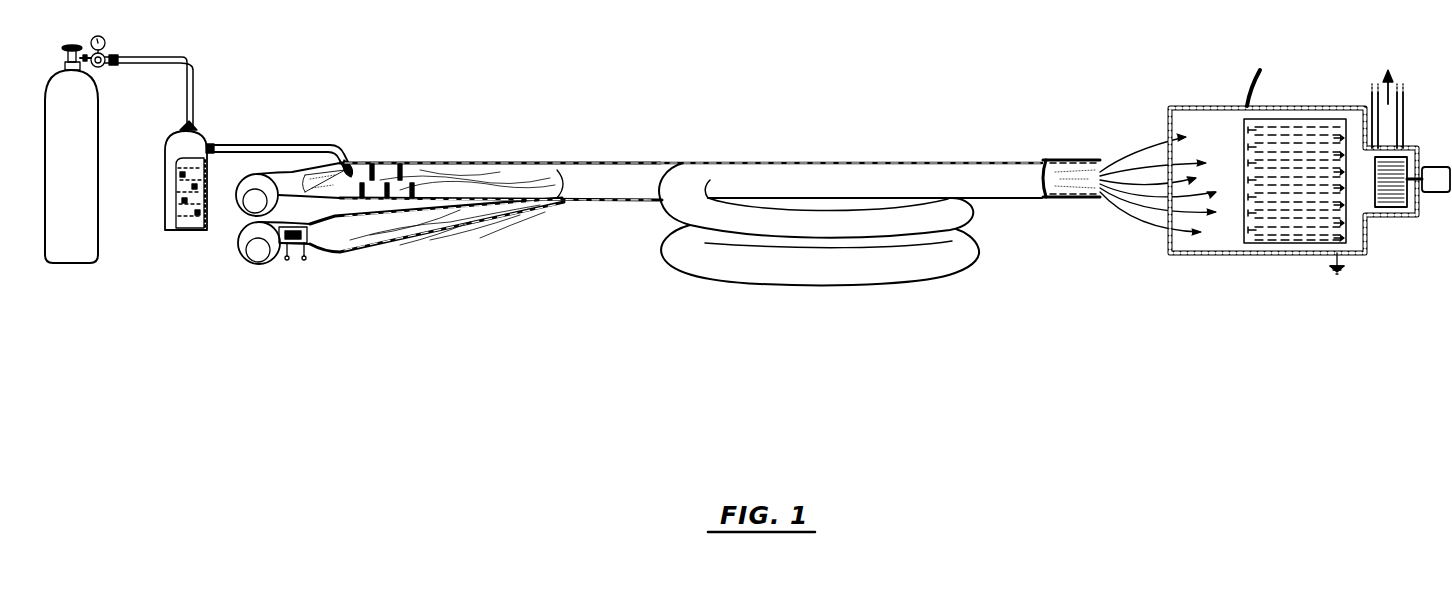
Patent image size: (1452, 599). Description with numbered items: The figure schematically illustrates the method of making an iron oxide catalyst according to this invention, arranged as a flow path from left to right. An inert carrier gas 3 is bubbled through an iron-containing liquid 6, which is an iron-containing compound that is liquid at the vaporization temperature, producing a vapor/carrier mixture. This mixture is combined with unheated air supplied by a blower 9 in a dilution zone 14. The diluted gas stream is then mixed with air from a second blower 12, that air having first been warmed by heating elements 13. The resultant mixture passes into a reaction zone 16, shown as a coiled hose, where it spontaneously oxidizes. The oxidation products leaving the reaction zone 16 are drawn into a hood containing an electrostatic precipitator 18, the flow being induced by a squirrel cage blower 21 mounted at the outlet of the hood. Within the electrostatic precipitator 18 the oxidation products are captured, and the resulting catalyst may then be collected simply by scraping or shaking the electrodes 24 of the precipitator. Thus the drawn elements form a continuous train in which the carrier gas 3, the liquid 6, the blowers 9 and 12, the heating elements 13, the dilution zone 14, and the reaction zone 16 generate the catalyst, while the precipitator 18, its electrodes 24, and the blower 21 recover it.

The inert carrier gas 3 is at (80, 175).
The iron-containing liquid 6 is at (176, 203).
The blower 9 is at (249, 178).
The blower 12 is at (247, 230).
The heating elements 13 is at (304, 226).
The dilution zone 14 is at (413, 157).
The reaction zone 16 is at (723, 262).
The electrostatic precipitator 18 is at (1292, 122).
The squirrel cage blower 21 is at (1391, 208).
The electrodes 24 is at (1255, 156).